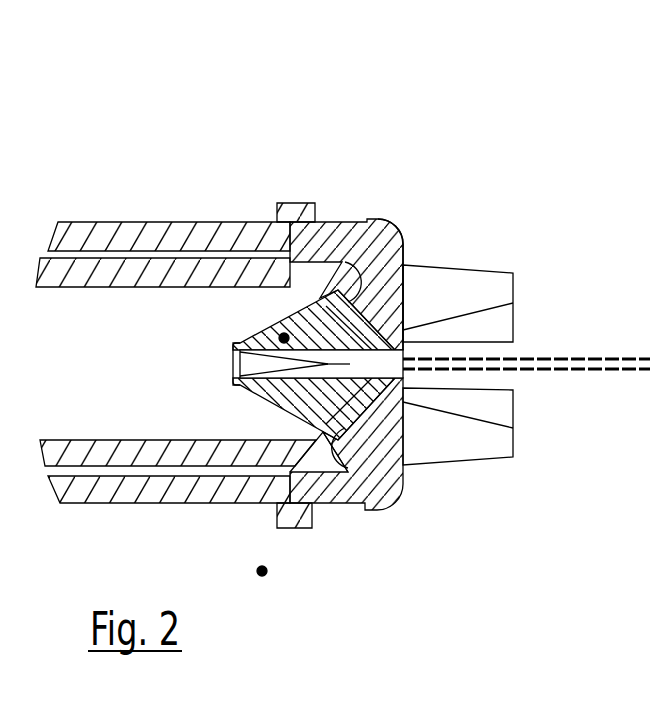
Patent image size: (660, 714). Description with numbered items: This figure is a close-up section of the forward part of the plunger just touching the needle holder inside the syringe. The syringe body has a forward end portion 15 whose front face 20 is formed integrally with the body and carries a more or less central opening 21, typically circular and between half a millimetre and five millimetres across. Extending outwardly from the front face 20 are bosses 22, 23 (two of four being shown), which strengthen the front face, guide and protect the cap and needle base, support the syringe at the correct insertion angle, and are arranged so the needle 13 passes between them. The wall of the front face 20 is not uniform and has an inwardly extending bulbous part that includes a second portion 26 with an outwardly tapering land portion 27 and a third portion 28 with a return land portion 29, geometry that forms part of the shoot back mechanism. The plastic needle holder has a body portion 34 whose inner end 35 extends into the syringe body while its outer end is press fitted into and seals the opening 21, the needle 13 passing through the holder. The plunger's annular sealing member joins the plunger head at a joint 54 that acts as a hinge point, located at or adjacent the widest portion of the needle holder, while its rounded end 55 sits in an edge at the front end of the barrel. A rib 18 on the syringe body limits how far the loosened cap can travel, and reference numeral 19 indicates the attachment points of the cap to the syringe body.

The needle 13 is at (589, 356).
The forward end portion 15 is at (261, 576).
The rib 18 is at (285, 200).
The attachment points 19 is at (373, 216).
The front face 20 is at (405, 244).
The central opening 21 is at (400, 399).
The boss 22 is at (495, 268).
The boss 23 is at (494, 461).
The second portion 26 is at (365, 455).
The land portion 27 is at (380, 232).
The third portion 28 is at (363, 300).
The land portion 29 is at (362, 264).
The body portion 34 is at (263, 405).
The inner end 35 is at (280, 337).
The joint 54 is at (322, 437).
The rounded end 55 is at (376, 481).